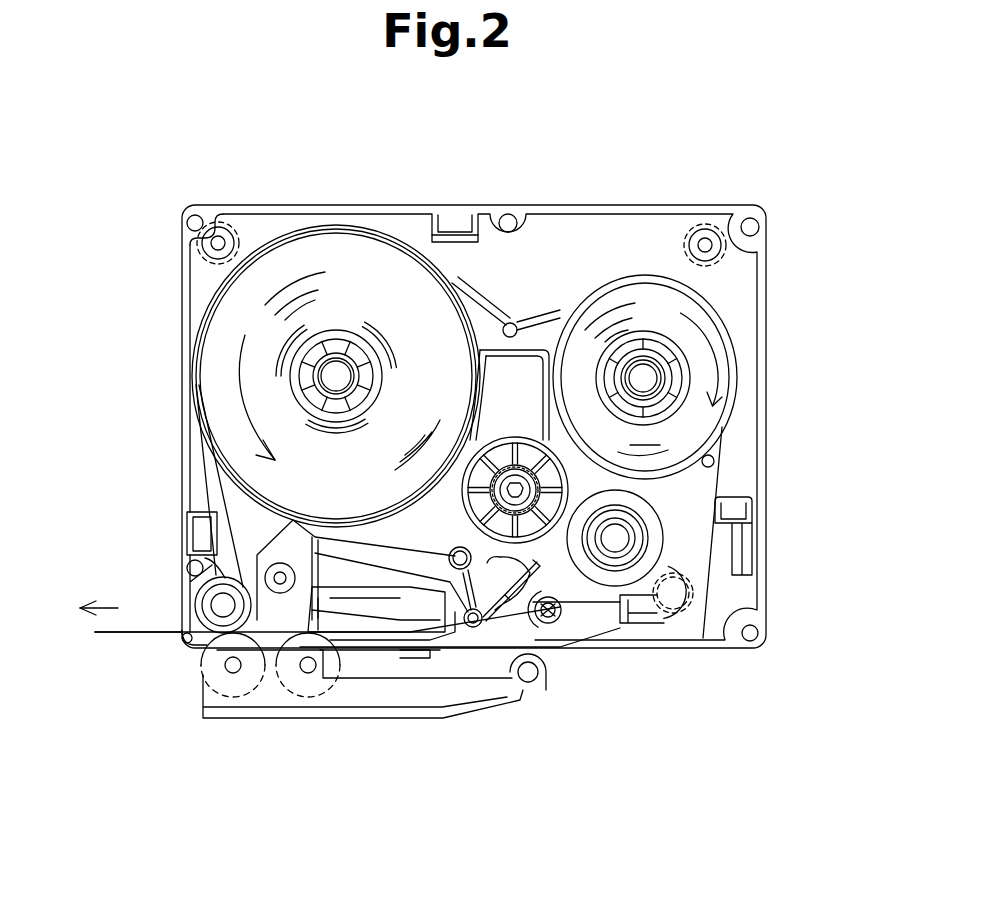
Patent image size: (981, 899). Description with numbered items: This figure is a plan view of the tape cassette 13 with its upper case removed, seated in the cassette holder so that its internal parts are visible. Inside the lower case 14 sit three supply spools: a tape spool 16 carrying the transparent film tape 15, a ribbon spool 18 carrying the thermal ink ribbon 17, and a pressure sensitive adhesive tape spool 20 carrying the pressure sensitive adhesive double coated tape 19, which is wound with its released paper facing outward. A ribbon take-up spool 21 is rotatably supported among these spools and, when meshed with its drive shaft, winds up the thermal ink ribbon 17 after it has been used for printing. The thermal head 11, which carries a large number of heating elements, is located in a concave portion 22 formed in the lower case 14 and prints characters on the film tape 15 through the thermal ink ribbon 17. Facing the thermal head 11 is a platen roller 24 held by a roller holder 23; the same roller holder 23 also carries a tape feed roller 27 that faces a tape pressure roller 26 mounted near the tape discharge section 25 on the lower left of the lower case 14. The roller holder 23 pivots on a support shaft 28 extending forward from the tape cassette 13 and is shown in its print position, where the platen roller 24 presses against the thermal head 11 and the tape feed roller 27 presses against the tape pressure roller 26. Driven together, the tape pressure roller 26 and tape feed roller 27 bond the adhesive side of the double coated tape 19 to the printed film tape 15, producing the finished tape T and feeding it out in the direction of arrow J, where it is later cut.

The thermal head 11 is at (340, 622).
The tape cassette 13 is at (794, 396).
The lower case 14 is at (768, 252).
The transparent film tape 15 is at (705, 323).
The tape spool 16 is at (682, 365).
The thermal ink ribbon 17 is at (652, 518).
The ribbon spool 18 is at (640, 540).
The pressure sensitive adhesive double coated tape 19 is at (342, 253).
The pressure sensitive adhesive tape spool 20 is at (355, 333).
The ribbon take-up spool 21 is at (522, 441).
The concave portion 22 is at (435, 608).
The roller holder 23 is at (428, 720).
The platen roller 24 is at (316, 690).
The tape discharge section 25 is at (187, 613).
The tape pressure roller 26 is at (210, 593).
The tape feed roller 27 is at (240, 688).
The support shaft 28 is at (528, 682).
The arrow J is at (115, 608).
The tape T is at (125, 632).